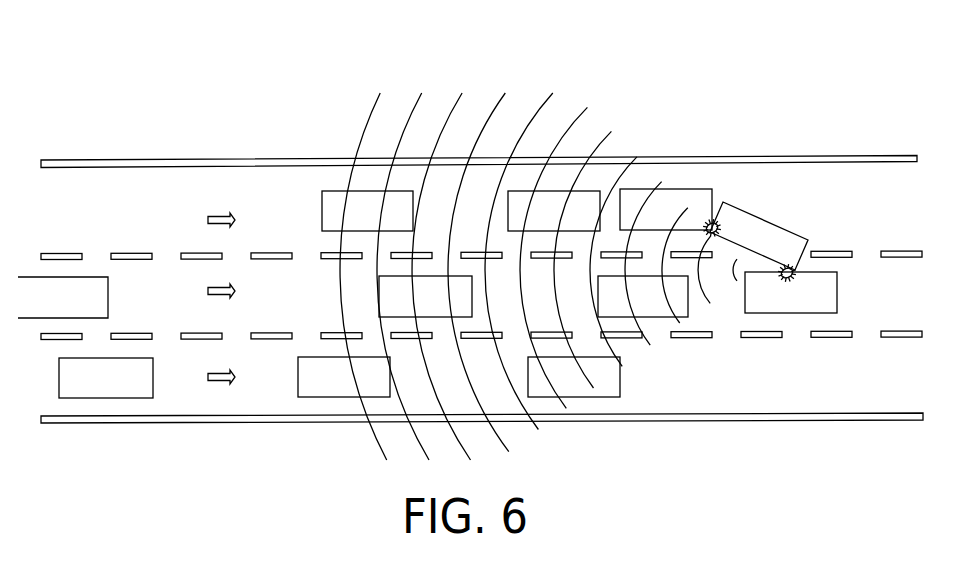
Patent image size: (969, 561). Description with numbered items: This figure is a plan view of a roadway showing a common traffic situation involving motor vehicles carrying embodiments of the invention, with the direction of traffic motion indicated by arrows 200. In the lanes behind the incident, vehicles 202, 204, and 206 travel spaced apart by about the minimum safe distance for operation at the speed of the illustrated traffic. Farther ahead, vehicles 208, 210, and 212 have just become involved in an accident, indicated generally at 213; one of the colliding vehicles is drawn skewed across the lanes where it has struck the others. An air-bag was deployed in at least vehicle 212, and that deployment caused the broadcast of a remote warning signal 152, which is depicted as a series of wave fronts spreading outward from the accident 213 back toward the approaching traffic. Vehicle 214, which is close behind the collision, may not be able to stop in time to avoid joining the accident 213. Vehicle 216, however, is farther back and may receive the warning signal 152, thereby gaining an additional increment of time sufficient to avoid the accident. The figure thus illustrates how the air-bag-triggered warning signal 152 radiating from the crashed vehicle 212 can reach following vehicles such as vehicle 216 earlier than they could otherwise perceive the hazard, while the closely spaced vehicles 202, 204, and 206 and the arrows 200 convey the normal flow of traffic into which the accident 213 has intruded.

The remote warning signal 152 is at (371, 114).
The arrows 200 is at (220, 213).
The vehicle 202 is at (603, 388).
The vehicle 204 is at (328, 387).
The vehicle 206 is at (122, 387).
The vehicle 208 is at (694, 197).
The vehicle 210 is at (775, 237).
The vehicle 212 is at (825, 290).
The accident 213 is at (827, 115).
The vehicle 214 is at (549, 200).
The vehicle 216 is at (331, 200).